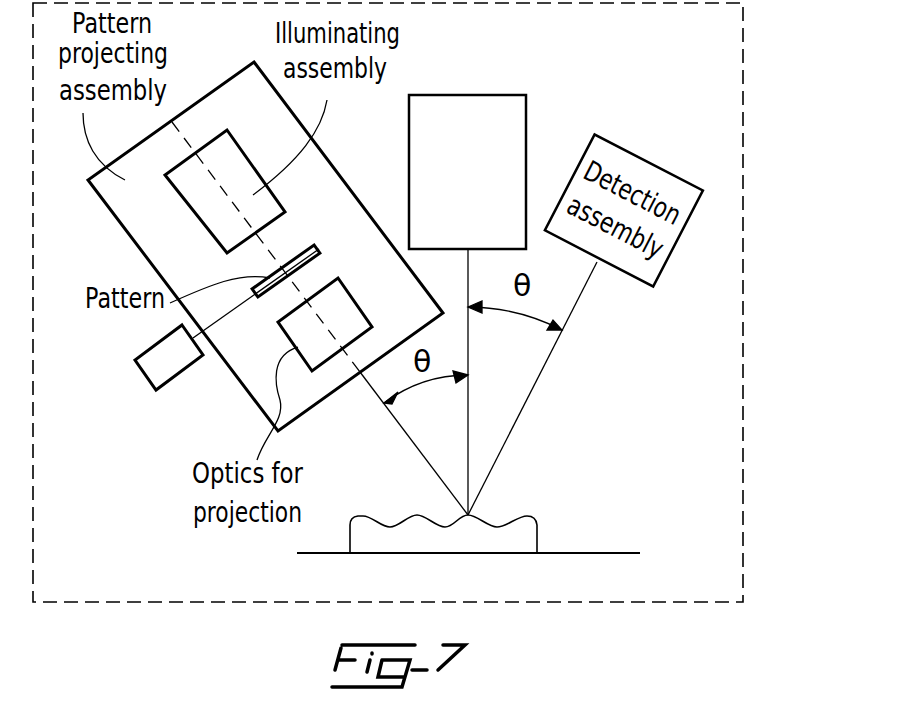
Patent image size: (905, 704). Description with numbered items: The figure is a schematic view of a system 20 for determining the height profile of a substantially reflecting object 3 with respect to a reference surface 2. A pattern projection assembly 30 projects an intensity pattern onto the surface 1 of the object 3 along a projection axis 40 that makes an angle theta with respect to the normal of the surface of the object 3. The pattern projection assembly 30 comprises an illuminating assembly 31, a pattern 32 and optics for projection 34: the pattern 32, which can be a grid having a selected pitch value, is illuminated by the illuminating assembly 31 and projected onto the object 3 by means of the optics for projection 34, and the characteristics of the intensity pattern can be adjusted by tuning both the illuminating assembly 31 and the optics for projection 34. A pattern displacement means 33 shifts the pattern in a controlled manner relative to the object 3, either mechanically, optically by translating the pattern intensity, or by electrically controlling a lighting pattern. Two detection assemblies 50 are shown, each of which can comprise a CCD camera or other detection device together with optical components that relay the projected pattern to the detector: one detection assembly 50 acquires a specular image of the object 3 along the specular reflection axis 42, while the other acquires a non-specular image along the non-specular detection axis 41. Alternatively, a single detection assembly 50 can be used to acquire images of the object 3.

The surface 1 is at (523, 513).
The reference surface 2 is at (620, 552).
The object 3 is at (522, 540).
The system 20 is at (743, 167).
The pattern projection assembly 30 is at (197, 117).
The illuminating assembly 31 is at (232, 160).
The pattern 32 is at (315, 250).
The pattern displacement means 33 is at (180, 365).
The optics for projection 34 is at (353, 310).
The projection axis 40 is at (418, 452).
The non-specular detection axis 41 is at (472, 425).
The specular reflection axis 42 is at (549, 357).
The detection assembly 50 is at (505, 117).